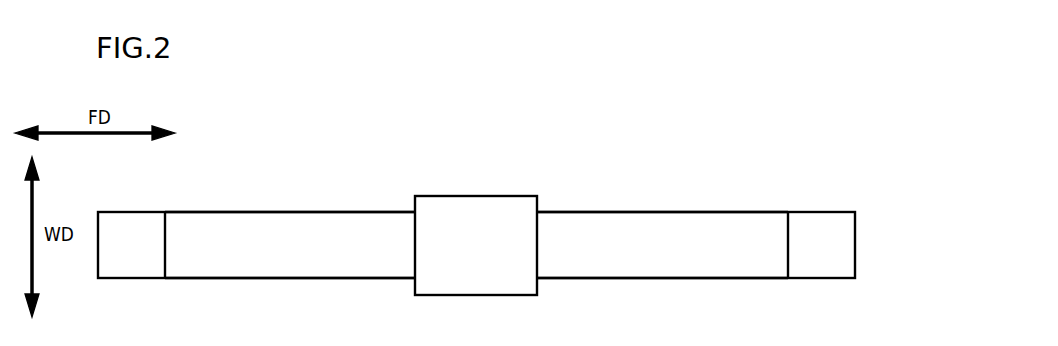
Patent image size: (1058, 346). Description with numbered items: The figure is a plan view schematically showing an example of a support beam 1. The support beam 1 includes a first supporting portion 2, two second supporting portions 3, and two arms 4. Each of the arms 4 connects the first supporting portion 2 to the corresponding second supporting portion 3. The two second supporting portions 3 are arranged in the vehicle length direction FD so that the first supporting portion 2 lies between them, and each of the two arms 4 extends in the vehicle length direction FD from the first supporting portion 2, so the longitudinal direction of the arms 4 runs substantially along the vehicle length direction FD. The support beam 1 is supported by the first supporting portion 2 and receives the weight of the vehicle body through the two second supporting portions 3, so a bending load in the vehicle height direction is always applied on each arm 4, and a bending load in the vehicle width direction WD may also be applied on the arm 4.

The support beam 1 is at (865, 198).
The first supporting portion 2 is at (477, 196).
The second supporting portion 3 is at (132, 212).
The arm 4 is at (277, 212).